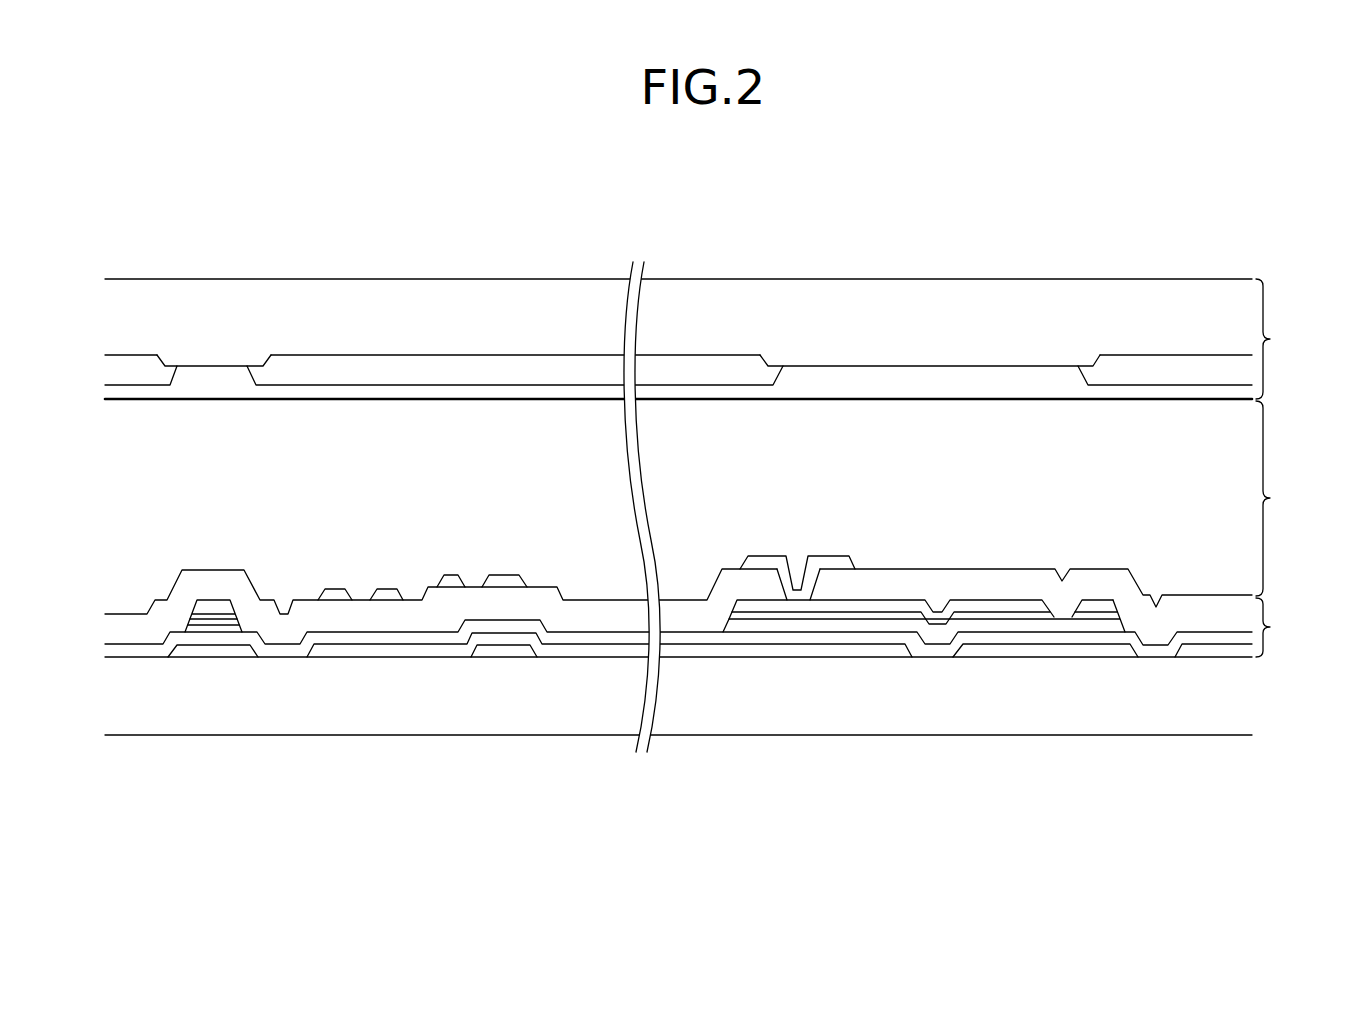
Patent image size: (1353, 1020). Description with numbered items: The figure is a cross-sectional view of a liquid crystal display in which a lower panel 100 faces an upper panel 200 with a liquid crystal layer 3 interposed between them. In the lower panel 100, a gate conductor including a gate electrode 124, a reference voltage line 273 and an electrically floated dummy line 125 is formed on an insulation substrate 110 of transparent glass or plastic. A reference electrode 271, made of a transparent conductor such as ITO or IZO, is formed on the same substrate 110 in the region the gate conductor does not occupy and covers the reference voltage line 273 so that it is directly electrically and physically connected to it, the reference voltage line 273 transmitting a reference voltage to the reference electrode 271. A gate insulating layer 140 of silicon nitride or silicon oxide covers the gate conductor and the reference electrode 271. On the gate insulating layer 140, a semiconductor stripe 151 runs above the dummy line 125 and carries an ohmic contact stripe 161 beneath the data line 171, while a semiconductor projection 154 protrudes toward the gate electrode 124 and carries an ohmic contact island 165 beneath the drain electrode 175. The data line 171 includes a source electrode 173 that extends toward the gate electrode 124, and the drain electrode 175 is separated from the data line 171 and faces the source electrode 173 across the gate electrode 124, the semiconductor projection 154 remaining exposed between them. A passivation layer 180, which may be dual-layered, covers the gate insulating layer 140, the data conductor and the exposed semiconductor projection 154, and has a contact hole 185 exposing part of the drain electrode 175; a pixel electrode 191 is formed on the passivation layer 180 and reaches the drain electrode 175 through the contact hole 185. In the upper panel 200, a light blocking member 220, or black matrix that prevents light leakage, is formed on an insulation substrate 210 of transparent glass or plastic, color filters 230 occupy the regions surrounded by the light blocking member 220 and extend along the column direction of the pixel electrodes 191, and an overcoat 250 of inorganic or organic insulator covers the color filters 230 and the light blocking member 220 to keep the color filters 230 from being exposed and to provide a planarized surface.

The lower panel 100 is at (1285, 635).
The insulation substrate 110 is at (920, 710).
The gate electrode 124 is at (1043, 650).
The dummy line 125 is at (213, 652).
The gate insulating layer 140 is at (1158, 650).
The semiconductor stripe 151 is at (202, 626).
The projection of semiconductor stripe 154 is at (841, 627).
The ohmic contact stripe 161 is at (226, 620).
The ohmic contact island 165 is at (972, 617).
The data line 171 is at (213, 607).
The source electrode 173 is at (1105, 608).
The drain electrode 175 is at (1023, 607).
The passivation layer 180 is at (585, 615).
The contact hole 185 is at (785, 585).
The pixel electrode 191 is at (333, 597).
The upper panel 200 is at (1285, 339).
The insulation substrate 210 is at (1060, 308).
The light blocking member 220 is at (210, 362).
The color filter 230 is at (382, 367).
The overcoat 250 is at (822, 385).
The reference electrode 271 is at (347, 650).
The reference voltage line 273 is at (502, 650).
The liquid crystal layer 3 is at (1276, 498).